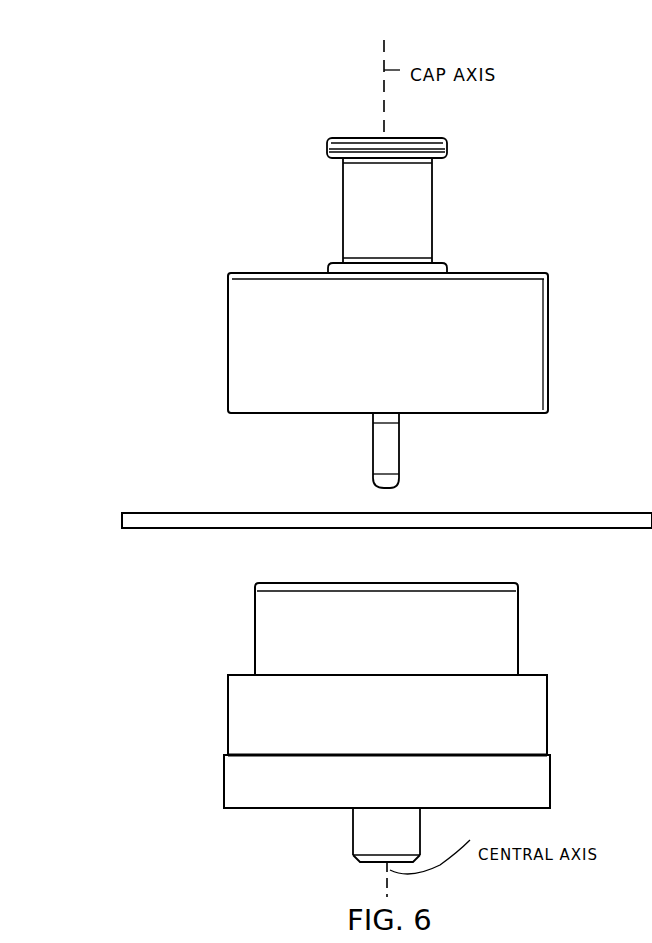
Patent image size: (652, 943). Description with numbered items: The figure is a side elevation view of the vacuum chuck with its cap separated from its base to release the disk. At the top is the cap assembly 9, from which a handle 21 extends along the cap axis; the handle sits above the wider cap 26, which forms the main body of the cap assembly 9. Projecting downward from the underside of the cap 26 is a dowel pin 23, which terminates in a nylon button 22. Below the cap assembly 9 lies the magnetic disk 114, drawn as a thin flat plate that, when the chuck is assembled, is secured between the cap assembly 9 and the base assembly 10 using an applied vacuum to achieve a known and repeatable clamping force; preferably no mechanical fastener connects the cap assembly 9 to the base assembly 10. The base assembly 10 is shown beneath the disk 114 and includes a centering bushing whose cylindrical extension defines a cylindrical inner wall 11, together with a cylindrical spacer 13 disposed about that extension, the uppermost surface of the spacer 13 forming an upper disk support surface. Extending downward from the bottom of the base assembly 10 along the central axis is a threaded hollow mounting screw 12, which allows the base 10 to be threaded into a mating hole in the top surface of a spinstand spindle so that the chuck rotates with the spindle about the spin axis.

The cap assembly 9 is at (349, 308).
The handle 21 is at (447, 143).
The cap 26 is at (537, 293).
The dowel pin 23 is at (393, 450).
The nylon button 22 is at (392, 485).
The magnetic disk 114 is at (337, 470).
The base assembly 10 is at (346, 734).
The cylindrical spacer 13 is at (532, 716).
The cylindrical inner wall 11 is at (537, 789).
The threaded hollow mounting screw 12 is at (352, 843).